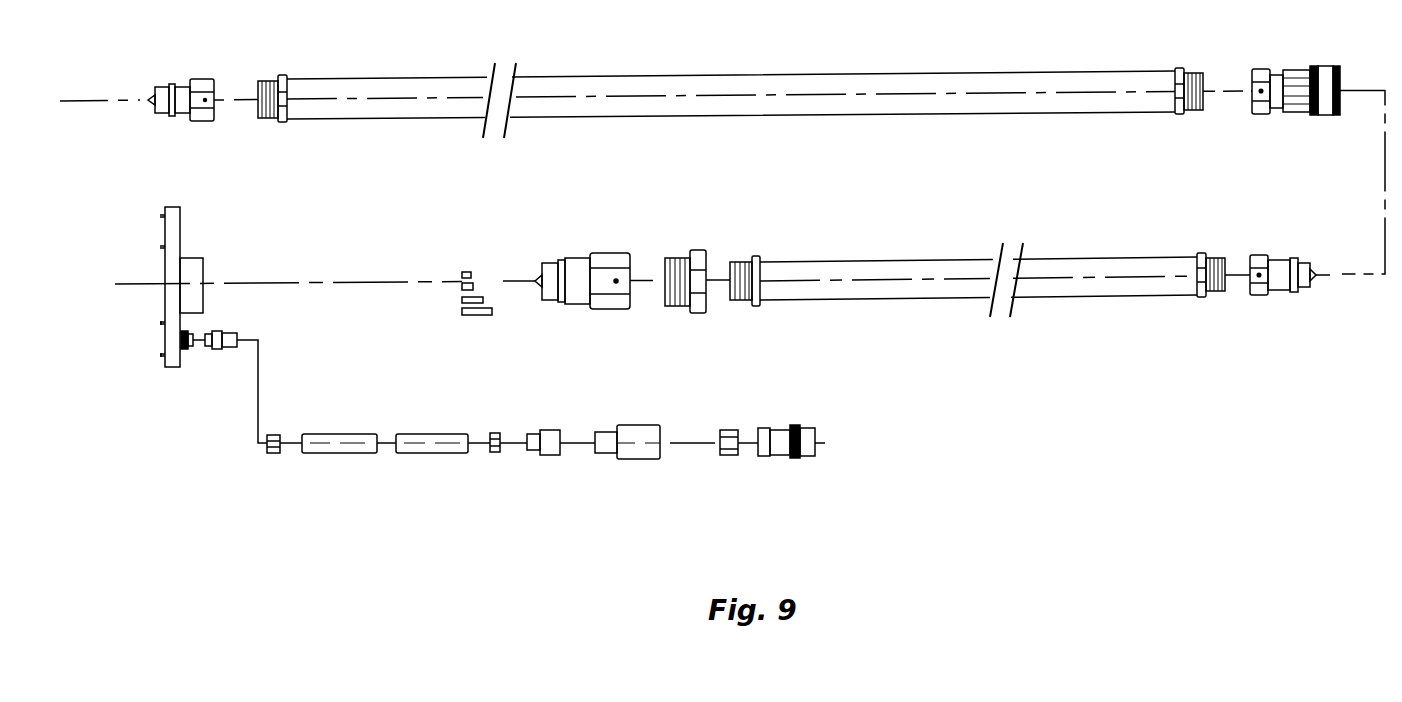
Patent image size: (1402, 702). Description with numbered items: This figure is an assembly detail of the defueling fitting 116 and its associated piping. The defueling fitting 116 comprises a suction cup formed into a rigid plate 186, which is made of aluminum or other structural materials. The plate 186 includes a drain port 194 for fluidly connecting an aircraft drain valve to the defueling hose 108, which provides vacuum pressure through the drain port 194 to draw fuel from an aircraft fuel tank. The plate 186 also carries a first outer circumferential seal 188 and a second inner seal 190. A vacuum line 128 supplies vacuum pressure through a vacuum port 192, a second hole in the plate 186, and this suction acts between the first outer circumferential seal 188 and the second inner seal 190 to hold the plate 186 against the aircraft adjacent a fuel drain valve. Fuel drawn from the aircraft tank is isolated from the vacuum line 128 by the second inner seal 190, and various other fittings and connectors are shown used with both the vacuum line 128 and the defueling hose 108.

The first defueling hose 108 is at (882, 290).
The first defueling fitting 116 is at (184, 340).
The vacuum line 128 is at (420, 450).
The plate 186 is at (178, 238).
The first outer circumferential seal 188 is at (165, 355).
The second inner seal 190 is at (165, 323).
The vacuum port 192 is at (187, 350).
The drain port 194 is at (203, 272).